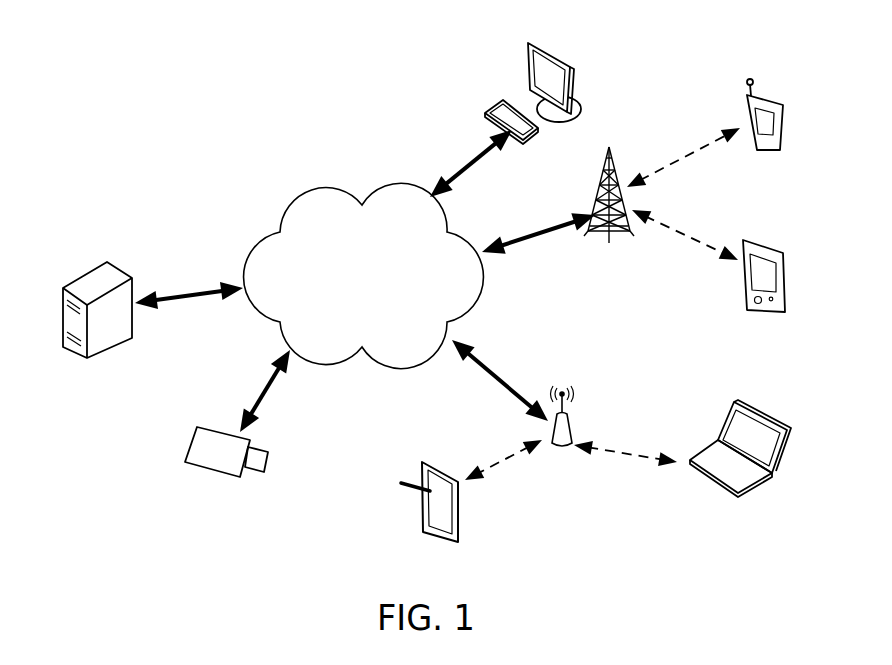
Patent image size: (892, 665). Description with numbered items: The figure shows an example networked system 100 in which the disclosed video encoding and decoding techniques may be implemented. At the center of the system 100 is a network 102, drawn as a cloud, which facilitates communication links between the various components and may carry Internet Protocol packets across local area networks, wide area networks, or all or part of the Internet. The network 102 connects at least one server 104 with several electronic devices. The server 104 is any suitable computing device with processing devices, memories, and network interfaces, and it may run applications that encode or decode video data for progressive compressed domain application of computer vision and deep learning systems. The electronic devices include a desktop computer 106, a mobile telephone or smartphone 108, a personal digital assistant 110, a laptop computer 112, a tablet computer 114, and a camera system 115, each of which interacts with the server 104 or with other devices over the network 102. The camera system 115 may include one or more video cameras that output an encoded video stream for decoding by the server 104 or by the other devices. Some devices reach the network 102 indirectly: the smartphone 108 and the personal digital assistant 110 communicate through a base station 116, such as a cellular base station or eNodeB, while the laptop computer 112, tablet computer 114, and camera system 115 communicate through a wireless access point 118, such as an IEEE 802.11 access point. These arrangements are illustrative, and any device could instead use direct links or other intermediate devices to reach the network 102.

The networked system 100 is at (203, 57).
The network 102 is at (282, 191).
The server 104 is at (73, 278).
The desktop computer 106 is at (545, 127).
The mobile telephone or smartphone 108 is at (783, 103).
The personal digital assistant (PDA) 110 is at (780, 253).
The laptop computer 112 is at (762, 480).
The tablet computer 114 is at (422, 467).
The camera system 115 is at (195, 468).
The base station 116 is at (630, 232).
The wireless access point 118 is at (572, 427).